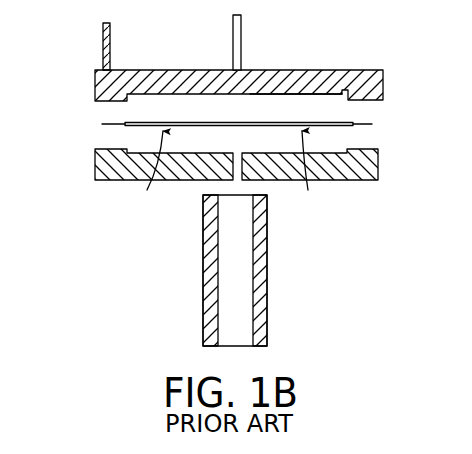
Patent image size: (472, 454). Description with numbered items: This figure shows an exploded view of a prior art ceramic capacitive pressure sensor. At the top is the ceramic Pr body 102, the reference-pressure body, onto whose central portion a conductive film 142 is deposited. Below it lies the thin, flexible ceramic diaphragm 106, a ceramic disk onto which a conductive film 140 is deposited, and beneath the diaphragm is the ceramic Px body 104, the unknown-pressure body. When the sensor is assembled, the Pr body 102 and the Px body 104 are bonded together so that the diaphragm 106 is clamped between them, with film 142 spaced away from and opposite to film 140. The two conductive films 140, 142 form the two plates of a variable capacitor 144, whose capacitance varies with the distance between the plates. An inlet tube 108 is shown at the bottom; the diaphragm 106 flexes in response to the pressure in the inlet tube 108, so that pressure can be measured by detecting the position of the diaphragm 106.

The ceramic Pr body 102 is at (95, 86).
The ceramic Px body 104 is at (95, 168).
The ceramic diaphragm 106 is at (313, 177).
The inlet tube 108 is at (203, 304).
The conductive film 140 is at (218, 121).
The conductive film 142 is at (293, 95).
The variable capacitor 144 is at (143, 174).